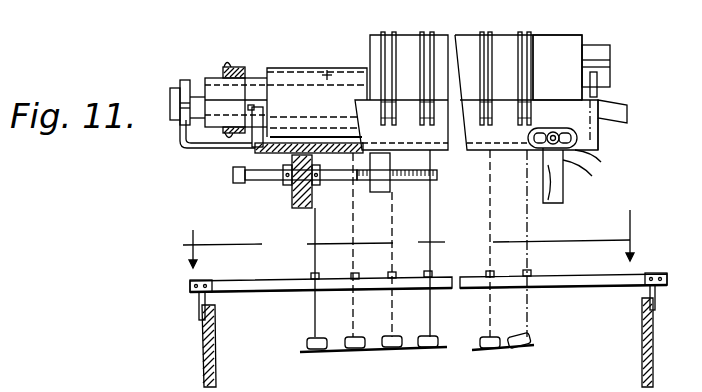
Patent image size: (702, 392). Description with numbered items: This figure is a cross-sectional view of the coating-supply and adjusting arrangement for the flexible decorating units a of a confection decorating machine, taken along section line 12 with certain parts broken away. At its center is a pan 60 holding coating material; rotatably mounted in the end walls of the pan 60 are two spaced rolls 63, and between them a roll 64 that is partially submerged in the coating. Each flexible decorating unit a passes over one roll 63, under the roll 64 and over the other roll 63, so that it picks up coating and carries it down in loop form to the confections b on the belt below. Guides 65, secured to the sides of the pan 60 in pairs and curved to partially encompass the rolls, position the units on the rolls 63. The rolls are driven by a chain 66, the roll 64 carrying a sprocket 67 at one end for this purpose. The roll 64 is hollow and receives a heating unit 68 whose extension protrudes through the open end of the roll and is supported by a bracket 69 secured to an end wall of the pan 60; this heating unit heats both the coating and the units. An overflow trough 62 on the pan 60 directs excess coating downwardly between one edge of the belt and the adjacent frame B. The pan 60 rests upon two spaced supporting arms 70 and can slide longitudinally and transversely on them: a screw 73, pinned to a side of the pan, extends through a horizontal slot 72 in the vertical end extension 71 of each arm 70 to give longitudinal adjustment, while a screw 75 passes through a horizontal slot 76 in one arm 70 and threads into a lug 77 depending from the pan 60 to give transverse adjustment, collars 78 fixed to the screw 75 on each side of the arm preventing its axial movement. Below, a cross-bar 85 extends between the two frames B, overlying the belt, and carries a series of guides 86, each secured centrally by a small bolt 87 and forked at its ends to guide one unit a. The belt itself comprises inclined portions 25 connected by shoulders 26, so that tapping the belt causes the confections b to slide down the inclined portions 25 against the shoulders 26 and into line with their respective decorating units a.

The chain 66 is at (200, 82).
The sprocket 67 is at (226, 66).
The roll 64 is at (303, 71).
The heating unit 68 is at (328, 72).
The bracket 69 is at (187, 144).
The pan 60 is at (280, 153).
The guides 65 is at (527, 32).
The rolls 63 is at (565, 45).
The overflow trough 62 is at (626, 104).
The horizontal slot 72 is at (600, 136).
The screw 73 is at (547, 147).
The supporting arms 70 is at (565, 203).
The hook 71 is at (588, 170).
The screw 75 is at (259, 176).
The horizontal slot 76 is at (291, 197).
The collars 78 is at (318, 186).
The lug 77 is at (380, 193).
The small bolt 87 is at (396, 272).
The guides 86 is at (434, 274).
The flexible decorating unit a is at (490, 221).
The section line 12 is at (409, 241).
The cross-bar 85 is at (300, 280).
The frame B is at (203, 343).
The confections b is at (297, 342).
The shoulders 26 is at (508, 347).
The inclined portions 25 is at (527, 345).